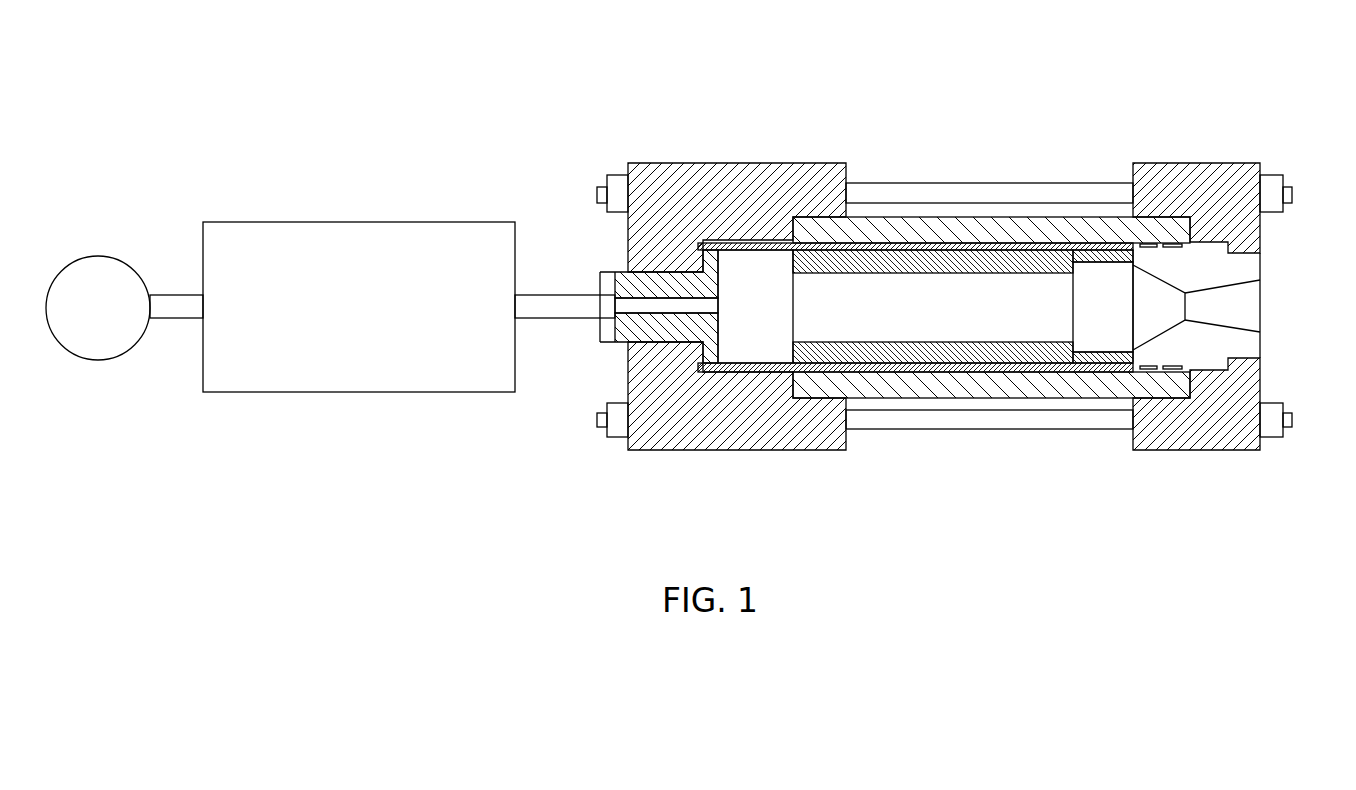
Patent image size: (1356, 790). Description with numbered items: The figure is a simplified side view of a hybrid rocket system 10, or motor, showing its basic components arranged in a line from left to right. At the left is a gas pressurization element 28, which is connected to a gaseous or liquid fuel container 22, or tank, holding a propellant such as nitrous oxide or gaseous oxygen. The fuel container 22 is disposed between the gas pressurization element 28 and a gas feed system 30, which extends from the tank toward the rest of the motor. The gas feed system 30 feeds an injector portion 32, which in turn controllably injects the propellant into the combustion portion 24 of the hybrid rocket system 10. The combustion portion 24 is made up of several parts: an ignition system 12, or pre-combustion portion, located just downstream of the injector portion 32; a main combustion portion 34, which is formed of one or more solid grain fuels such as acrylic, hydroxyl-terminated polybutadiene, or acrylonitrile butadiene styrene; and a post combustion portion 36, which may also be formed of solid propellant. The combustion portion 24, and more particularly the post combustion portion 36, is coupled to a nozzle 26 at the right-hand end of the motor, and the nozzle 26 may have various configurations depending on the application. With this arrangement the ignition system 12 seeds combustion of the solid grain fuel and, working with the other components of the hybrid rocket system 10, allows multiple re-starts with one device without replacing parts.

The hybrid rocket system 10 is at (1273, 73).
The ignition system 12 is at (757, 352).
The gaseous or liquid fuel container 22 is at (227, 377).
The combustion portion 24 is at (963, 364).
The nozzle 26 is at (1210, 358).
The gas pressurization element 28 is at (100, 350).
The gas feed system 30 is at (557, 312).
The injector portion 32 is at (663, 287).
The main combustion portion 34 is at (890, 350).
The post combustion portion 36 is at (1093, 360).